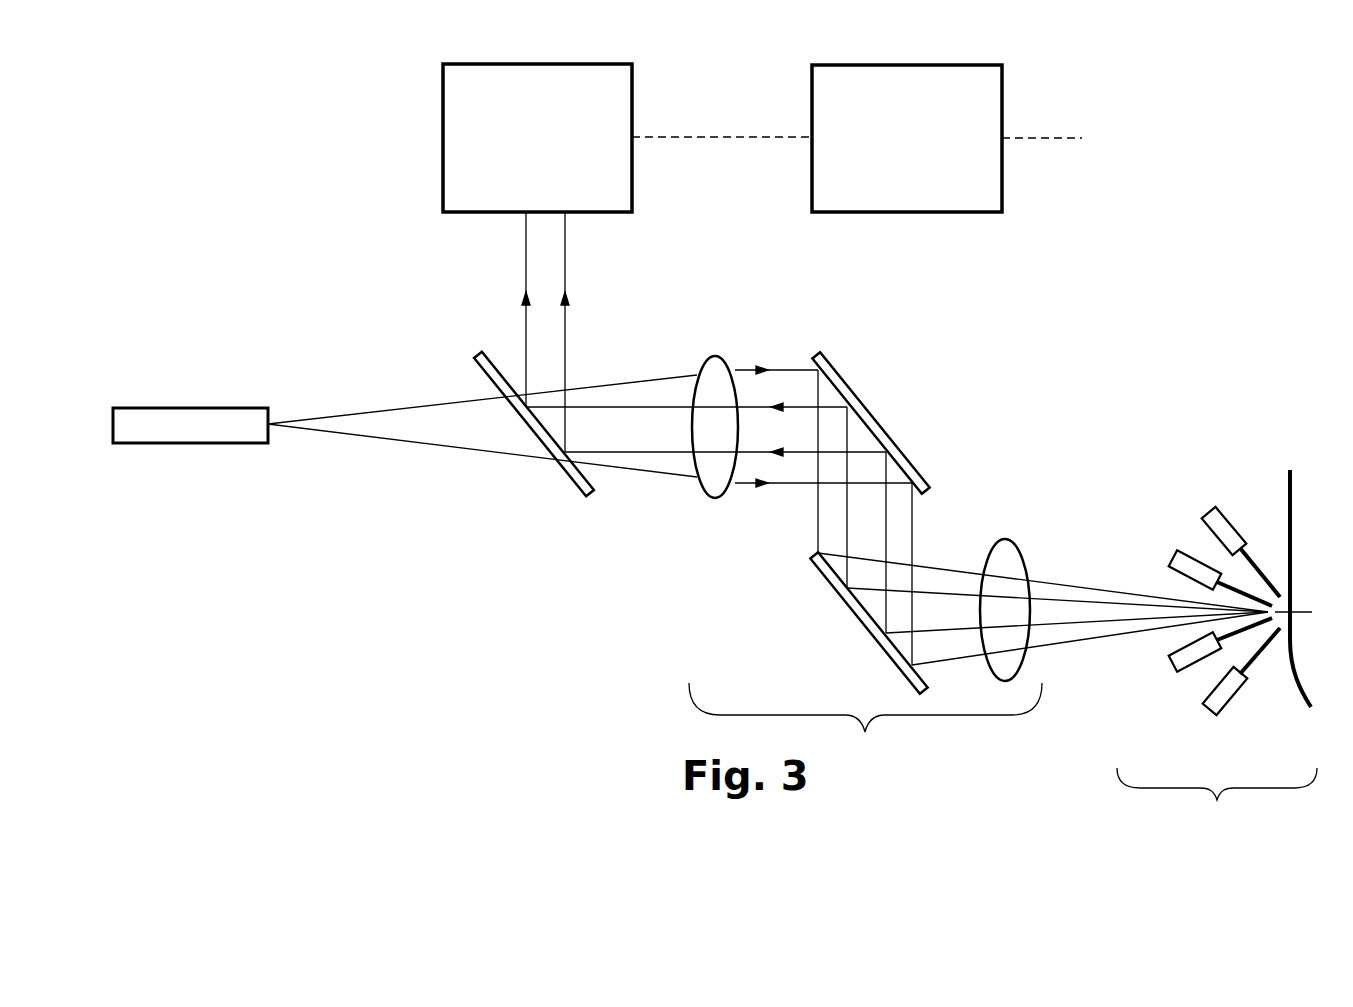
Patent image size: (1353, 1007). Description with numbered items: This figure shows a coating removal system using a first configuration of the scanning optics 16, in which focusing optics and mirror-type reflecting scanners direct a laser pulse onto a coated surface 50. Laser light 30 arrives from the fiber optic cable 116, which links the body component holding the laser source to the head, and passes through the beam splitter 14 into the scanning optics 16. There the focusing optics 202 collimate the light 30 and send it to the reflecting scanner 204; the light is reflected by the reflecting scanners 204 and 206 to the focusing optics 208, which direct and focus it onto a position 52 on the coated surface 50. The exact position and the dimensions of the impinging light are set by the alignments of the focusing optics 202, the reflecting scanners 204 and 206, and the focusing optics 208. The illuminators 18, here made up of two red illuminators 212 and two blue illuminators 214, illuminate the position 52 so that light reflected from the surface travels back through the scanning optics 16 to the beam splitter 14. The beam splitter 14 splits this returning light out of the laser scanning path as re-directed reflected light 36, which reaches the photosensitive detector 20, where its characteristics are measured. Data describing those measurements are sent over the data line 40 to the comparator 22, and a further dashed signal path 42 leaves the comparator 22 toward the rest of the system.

The beam splitter 14 is at (565, 478).
The scanning optics 16 is at (865, 724).
The illuminators 18 is at (1217, 798).
The photosensitive detector 20 is at (536, 62).
The comparator 22 is at (900, 63).
The light 30 is at (368, 410).
The re-directed reflected light 36 is at (526, 272).
The data line 40 is at (716, 135).
The comparator output signal 42 is at (1046, 136).
The coated surface 50 is at (1289, 468).
The position 52 is at (1296, 603).
The fiber optic cable 116 is at (180, 407).
The focusing optics 202 is at (714, 356).
The reflecting scanner 204 is at (880, 420).
The reflecting scanner 206 is at (855, 612).
The focusing optics 208 is at (1003, 539).
The red illuminators 212 is at (1172, 556).
The blue illuminators 214 is at (1210, 505).